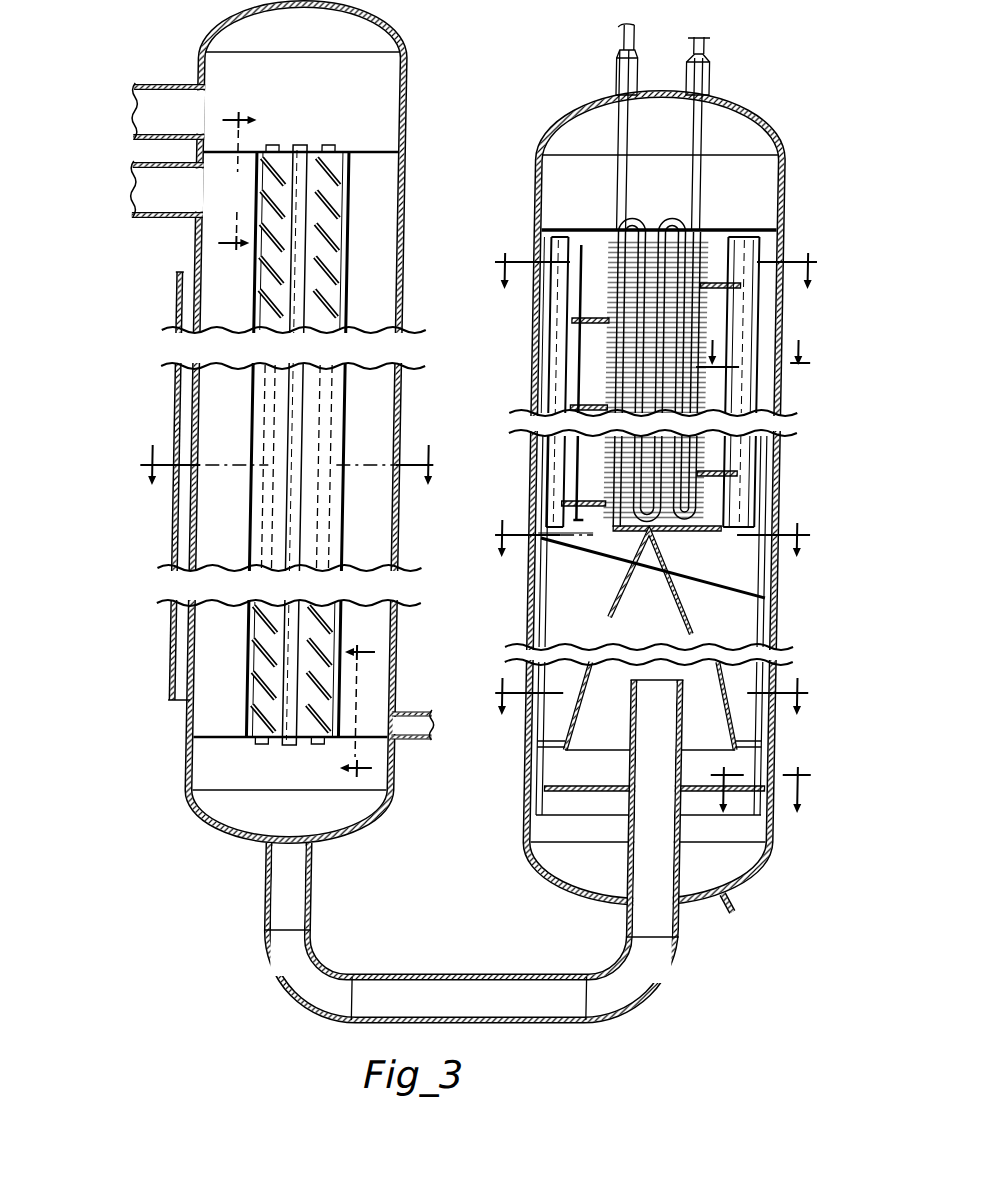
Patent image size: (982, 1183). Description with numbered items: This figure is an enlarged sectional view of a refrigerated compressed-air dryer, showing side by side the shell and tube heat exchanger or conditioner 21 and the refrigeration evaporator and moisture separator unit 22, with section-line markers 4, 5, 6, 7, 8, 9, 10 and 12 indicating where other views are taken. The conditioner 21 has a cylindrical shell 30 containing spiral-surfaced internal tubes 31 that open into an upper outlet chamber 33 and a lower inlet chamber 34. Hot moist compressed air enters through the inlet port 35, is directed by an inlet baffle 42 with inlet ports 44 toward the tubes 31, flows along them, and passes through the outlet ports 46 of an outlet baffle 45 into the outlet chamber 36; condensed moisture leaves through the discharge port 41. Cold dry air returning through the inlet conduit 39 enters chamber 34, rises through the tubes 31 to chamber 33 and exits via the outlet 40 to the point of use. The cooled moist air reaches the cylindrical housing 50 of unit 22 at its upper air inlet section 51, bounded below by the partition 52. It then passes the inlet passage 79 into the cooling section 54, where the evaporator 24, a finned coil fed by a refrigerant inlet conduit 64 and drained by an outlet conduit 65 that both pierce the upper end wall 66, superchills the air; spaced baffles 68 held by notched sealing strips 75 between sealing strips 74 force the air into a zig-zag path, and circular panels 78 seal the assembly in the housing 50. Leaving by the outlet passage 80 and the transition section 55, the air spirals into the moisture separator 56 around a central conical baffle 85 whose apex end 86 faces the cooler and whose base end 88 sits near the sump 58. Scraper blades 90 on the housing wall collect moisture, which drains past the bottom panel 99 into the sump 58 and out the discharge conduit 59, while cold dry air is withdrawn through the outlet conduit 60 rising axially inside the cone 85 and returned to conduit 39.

The shell and tube heat exchanger 21 is at (411, 134).
The refrigeration evaporator and moisture separator unit 22 is at (787, 452).
The evaporator 24 is at (606, 258).
The cylindrical housing or shell 30 is at (408, 305).
The internal tubes 31 is at (330, 145).
The outlet chamber 33 is at (358, 43).
The inlet chamber 34 is at (230, 817).
The inlet port 35 is at (180, 215).
The outlet chamber 36 is at (382, 412).
The inlet conduit 39 is at (298, 892).
The outlet 40 is at (152, 97).
The discharge port 41 is at (414, 738).
The inlet baffle 42 is at (246, 316).
The inlet ports 44 is at (252, 186).
The outlet baffle 45 is at (350, 283).
The outlet ports 46 is at (357, 713).
The cylindrical housing 50 is at (792, 333).
The upper air inlet section 51 is at (760, 140).
The internal partition or baffle 52 is at (755, 232).
The cooling section 54 is at (592, 284).
The transition section 55 is at (718, 560).
The moisture separator 56 is at (737, 631).
The sump 58 is at (740, 860).
The discharge conduit 59 is at (727, 905).
The outlet conduit 60 is at (675, 710).
The refrigerant inlet conduit 64 is at (614, 120).
The refrigerant outlet conduit 65 is at (703, 128).
The upper end wall 66 is at (764, 74).
The baffles 68 is at (595, 350).
The longitudinal sealing fins or strips 74 is at (552, 243).
The notched sealing strip 75 is at (757, 252).
The circular panels 78 is at (553, 230).
The inlet passage 79 is at (720, 228).
The outlet passage 80 is at (588, 543).
The central conical baffle 85 is at (739, 730).
The apex end 86 is at (653, 533).
The base end 88 is at (617, 722).
The scraper blades 90 is at (552, 607).
The bottom panel 99 is at (563, 784).
The section line 4- 4 is at (288, 484).
The section line 5- 5 is at (238, 184).
The section line 6- 6 is at (344, 702).
The section line 7- 7 is at (655, 285).
The section line 8- 8 is at (649, 551).
The section line 9- 9 is at (649, 715).
The section line 10- 10 is at (758, 807).
The section line 12- 12 is at (768, 340).